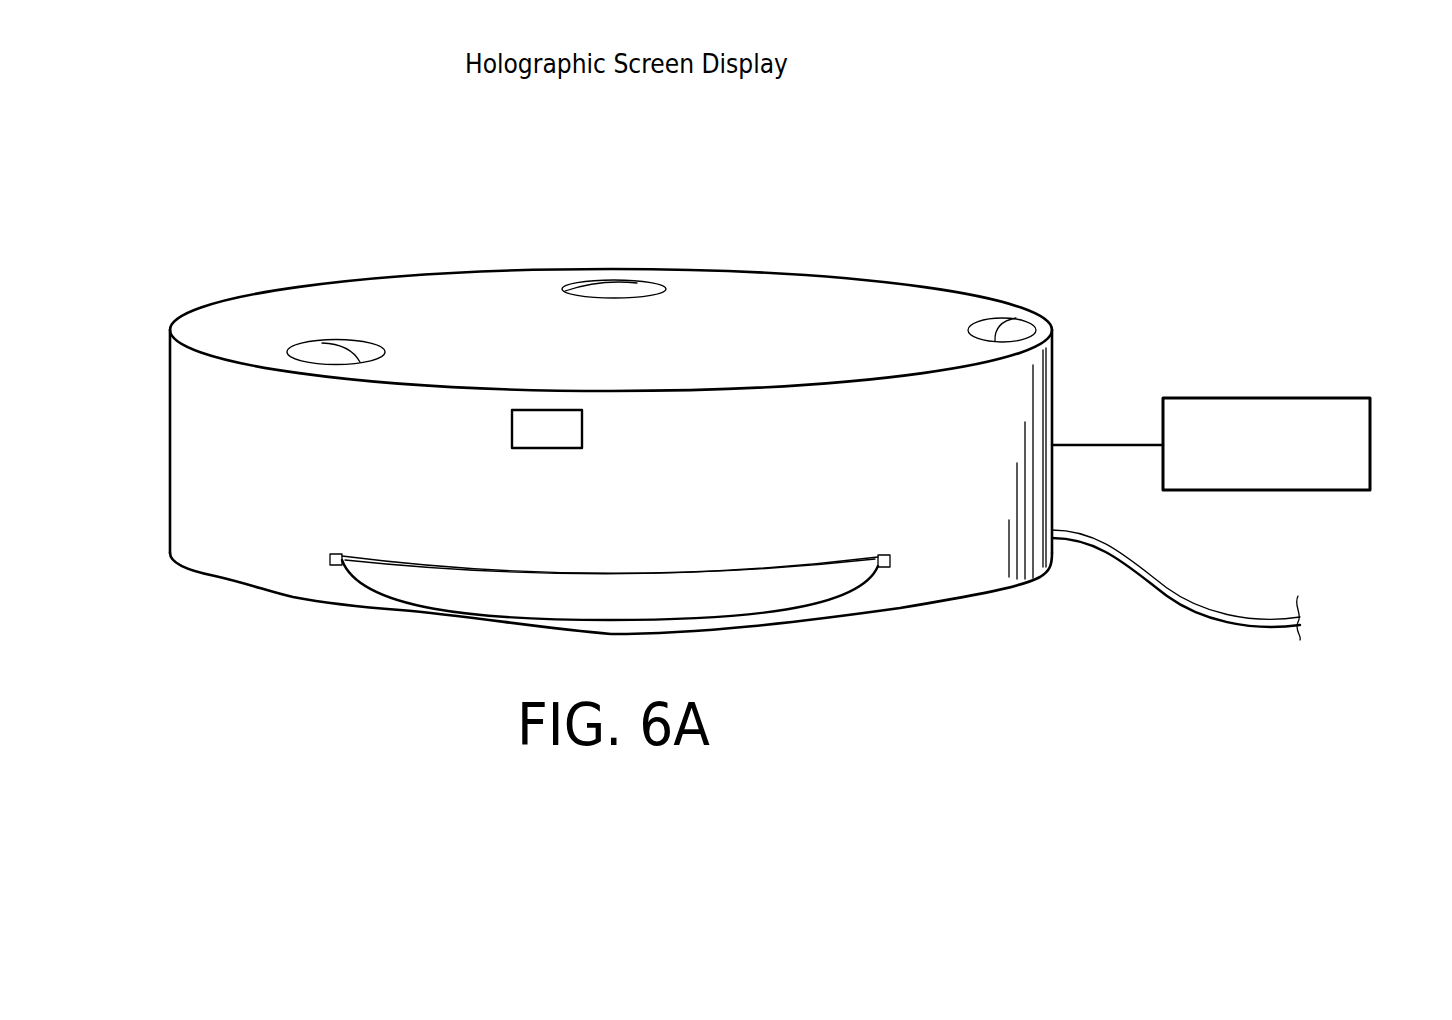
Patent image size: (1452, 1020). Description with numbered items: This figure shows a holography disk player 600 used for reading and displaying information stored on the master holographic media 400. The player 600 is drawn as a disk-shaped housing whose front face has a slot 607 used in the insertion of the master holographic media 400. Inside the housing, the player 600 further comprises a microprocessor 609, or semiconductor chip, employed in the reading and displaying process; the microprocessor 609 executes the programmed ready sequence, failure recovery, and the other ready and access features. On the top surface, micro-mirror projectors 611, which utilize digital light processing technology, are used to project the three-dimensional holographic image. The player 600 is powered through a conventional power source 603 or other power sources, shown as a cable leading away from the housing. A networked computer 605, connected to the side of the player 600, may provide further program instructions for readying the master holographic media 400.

The holography disk player 600 is at (737, 268).
The micro-mirror projectors 611 is at (1061, 272).
The microprocessor 609 is at (622, 430).
The networked computer 605 is at (1110, 443).
The slot 607 is at (333, 556).
The master holographic media 400 is at (803, 605).
The conventional power source 603 is at (1244, 672).